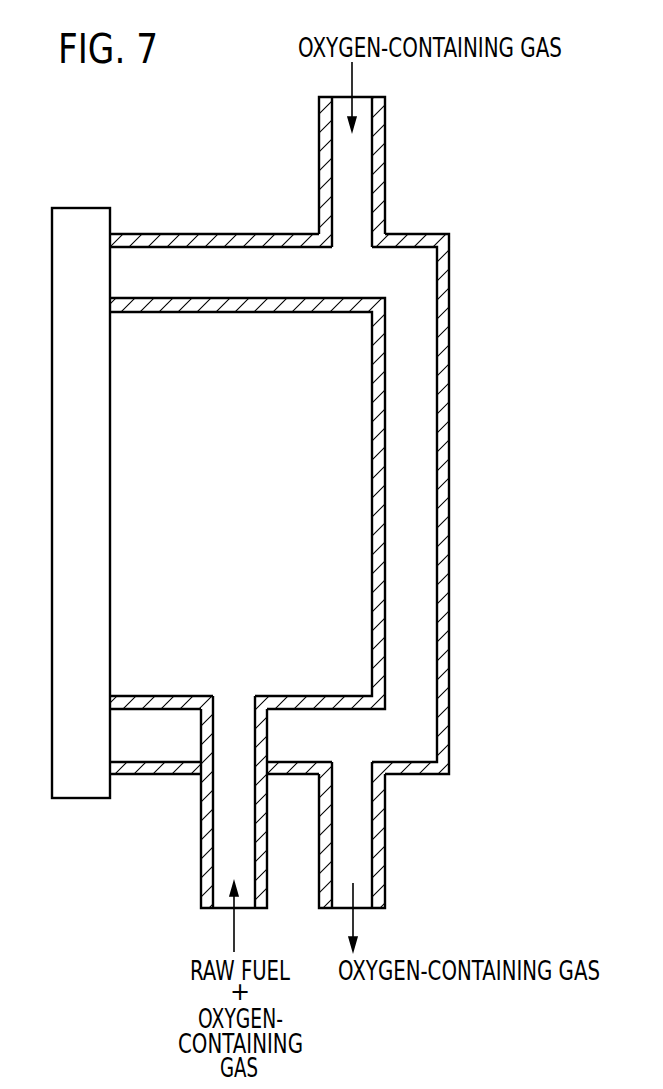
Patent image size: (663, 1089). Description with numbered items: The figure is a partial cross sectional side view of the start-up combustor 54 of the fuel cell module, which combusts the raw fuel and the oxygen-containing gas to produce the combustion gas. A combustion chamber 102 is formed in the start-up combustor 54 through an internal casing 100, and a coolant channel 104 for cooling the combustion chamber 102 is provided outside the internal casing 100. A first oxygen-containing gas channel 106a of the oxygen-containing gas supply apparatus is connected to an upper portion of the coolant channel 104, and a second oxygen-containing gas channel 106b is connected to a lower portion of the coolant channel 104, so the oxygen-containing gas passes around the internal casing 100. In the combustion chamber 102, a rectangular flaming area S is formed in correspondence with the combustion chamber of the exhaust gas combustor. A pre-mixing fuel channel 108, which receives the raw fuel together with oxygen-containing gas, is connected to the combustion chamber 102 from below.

The start-up combustor 54 is at (259, 135).
The flaming area S is at (52, 388).
The internal casing 100 is at (380, 562).
The combustion chamber 102 is at (256, 486).
The coolant channel 104 is at (415, 440).
The first oxygen-containing gas channel 106a is at (381, 170).
The second oxygen-containing gas channel 106b is at (382, 828).
The pre-mixing fuel channel 108 is at (208, 848).